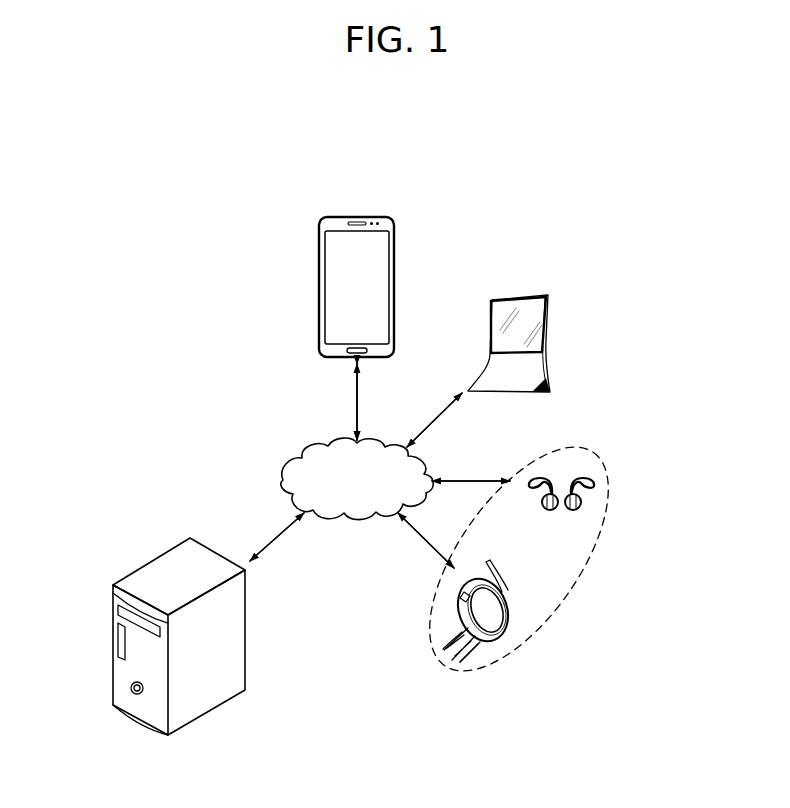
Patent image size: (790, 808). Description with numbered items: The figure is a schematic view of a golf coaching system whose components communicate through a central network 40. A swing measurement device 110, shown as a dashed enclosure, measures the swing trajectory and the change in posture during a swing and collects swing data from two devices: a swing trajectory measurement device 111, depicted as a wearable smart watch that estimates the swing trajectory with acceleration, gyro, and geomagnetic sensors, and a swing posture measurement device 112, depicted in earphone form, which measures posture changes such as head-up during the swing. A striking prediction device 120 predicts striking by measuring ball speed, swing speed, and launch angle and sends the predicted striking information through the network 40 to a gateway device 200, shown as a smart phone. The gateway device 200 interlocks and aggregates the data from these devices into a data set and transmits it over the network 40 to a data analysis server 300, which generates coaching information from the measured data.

The network 40 is at (289, 466).
The swing measurement device 110 is at (577, 582).
The swing trajectory measurement device 111 is at (490, 634).
The swing posture measurement device 112 is at (597, 478).
The striking prediction device 120 is at (548, 308).
The gateway device 200 is at (318, 279).
The data analysis server 300 is at (208, 697).